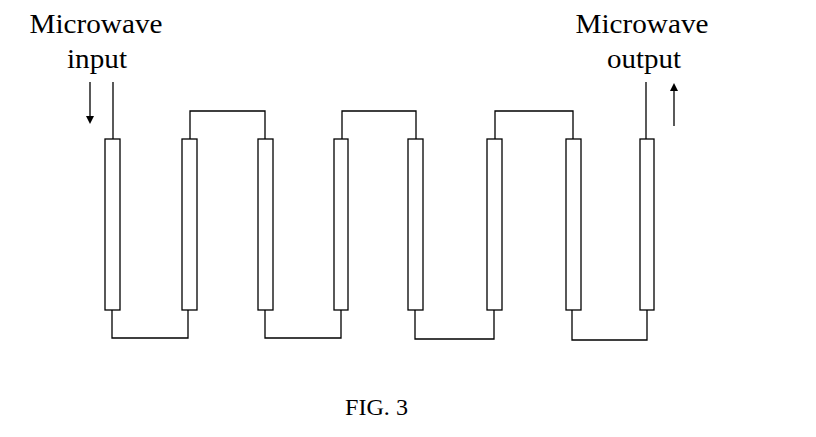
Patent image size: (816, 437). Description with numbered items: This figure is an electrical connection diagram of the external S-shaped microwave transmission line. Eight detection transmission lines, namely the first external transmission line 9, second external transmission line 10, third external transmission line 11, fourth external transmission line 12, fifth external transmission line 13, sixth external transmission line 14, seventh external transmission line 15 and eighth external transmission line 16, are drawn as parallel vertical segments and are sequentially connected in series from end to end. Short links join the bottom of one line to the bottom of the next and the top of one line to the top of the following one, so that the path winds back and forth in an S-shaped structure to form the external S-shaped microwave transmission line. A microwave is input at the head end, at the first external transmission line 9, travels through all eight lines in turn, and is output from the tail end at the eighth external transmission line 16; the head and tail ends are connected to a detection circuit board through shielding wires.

The first external transmission line 9 is at (113, 210).
The second external transmission line 10 is at (188, 215).
The third external transmission line 11 is at (268, 217).
The fourth external transmission line 12 is at (343, 218).
The fifth external transmission line 13 is at (415, 218).
The sixth external transmission line 14 is at (495, 218).
The seventh external transmission line 15 is at (575, 218).
The eighth external transmission line 16 is at (644, 220).